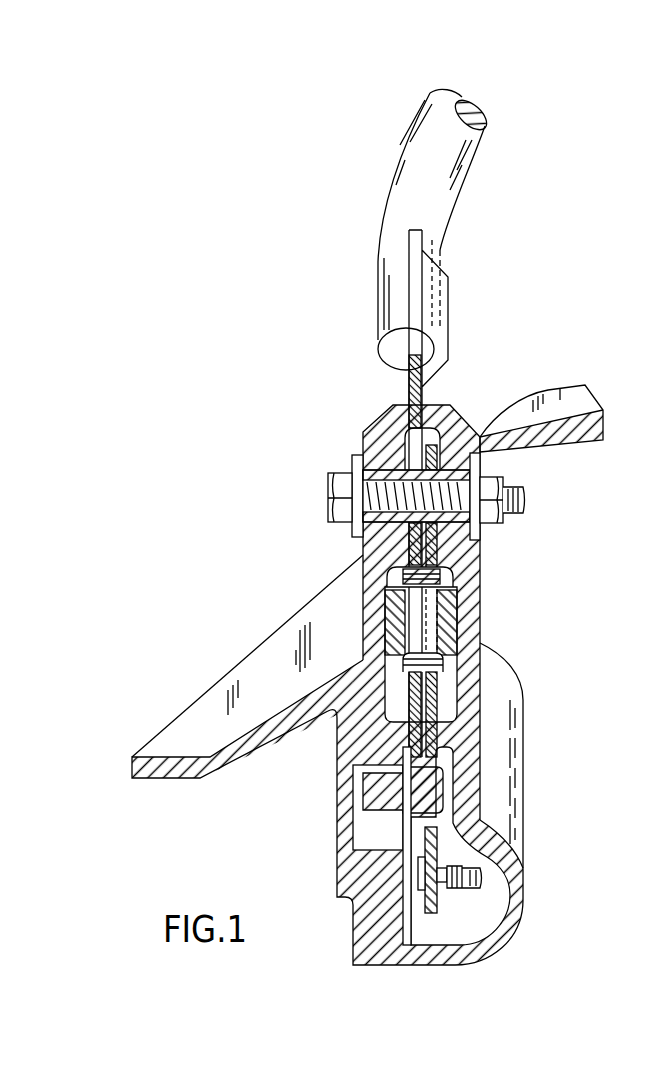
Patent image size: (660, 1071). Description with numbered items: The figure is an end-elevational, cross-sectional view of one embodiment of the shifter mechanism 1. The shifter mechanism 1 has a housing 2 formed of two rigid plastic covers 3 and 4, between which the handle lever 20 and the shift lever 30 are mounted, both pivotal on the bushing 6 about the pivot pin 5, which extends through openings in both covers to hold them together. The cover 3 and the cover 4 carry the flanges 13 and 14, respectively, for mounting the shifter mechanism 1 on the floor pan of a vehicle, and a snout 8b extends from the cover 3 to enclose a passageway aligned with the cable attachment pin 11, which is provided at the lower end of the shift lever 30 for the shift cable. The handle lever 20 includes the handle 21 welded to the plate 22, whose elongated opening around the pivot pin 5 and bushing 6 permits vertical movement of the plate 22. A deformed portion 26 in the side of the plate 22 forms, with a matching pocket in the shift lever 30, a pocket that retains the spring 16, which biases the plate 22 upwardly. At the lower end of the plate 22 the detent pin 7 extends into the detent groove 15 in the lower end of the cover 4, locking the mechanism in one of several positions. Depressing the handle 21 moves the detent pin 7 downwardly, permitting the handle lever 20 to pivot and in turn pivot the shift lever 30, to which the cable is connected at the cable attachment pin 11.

The shifter mechanism 1 is at (478, 350).
The housing 2 is at (486, 575).
The cover 3 is at (476, 742).
The cover 4 is at (360, 922).
The pivot pin 5 is at (450, 496).
The bushing 6 is at (357, 520).
The detent pin 7 is at (372, 797).
The snout 8b is at (520, 887).
The cable attachment pin 11 is at (468, 863).
The flange 13 is at (553, 413).
The flange 14 is at (210, 750).
The detent groove 15 is at (370, 838).
The spring 16 is at (460, 612).
The handle lever 20 is at (403, 378).
The handle 21 is at (437, 187).
The plate 22 is at (383, 745).
The deformed portion 26 is at (387, 610).
The shift lever 30 is at (447, 678).